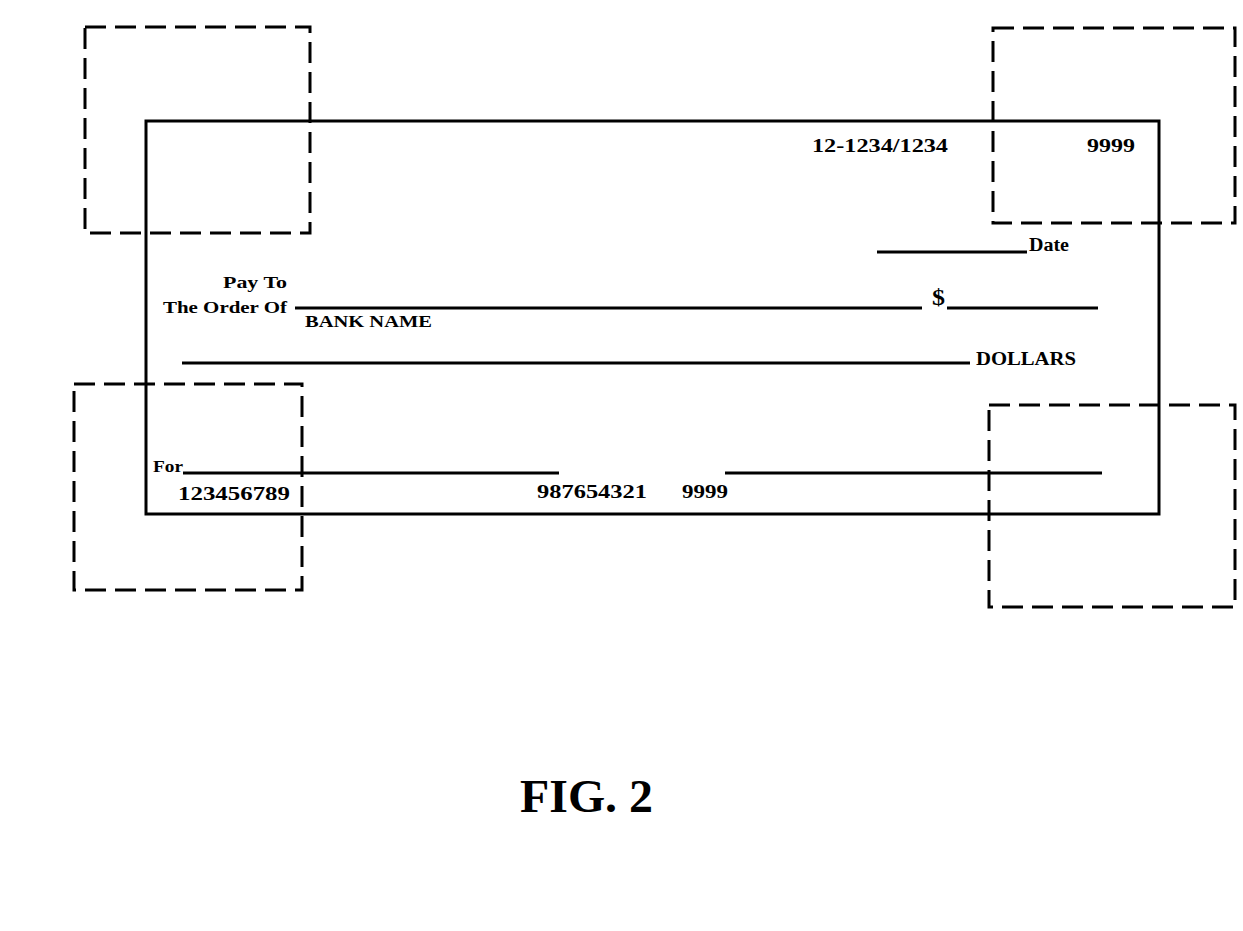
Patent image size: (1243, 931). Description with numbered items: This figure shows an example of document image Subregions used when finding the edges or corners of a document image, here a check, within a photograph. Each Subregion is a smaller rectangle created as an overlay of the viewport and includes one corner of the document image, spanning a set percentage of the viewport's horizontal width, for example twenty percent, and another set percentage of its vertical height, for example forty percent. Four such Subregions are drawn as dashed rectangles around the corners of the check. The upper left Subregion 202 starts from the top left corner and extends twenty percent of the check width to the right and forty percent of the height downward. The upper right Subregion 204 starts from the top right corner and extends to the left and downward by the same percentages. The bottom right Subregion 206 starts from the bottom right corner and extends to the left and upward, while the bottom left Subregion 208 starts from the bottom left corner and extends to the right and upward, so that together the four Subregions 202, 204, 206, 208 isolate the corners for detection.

The upper left Subregion 202 is at (258, 182).
The upper right Subregion 204 is at (1060, 196).
The bottom right Subregion 206 is at (1060, 452).
The bottom left Subregion 208 is at (258, 452).